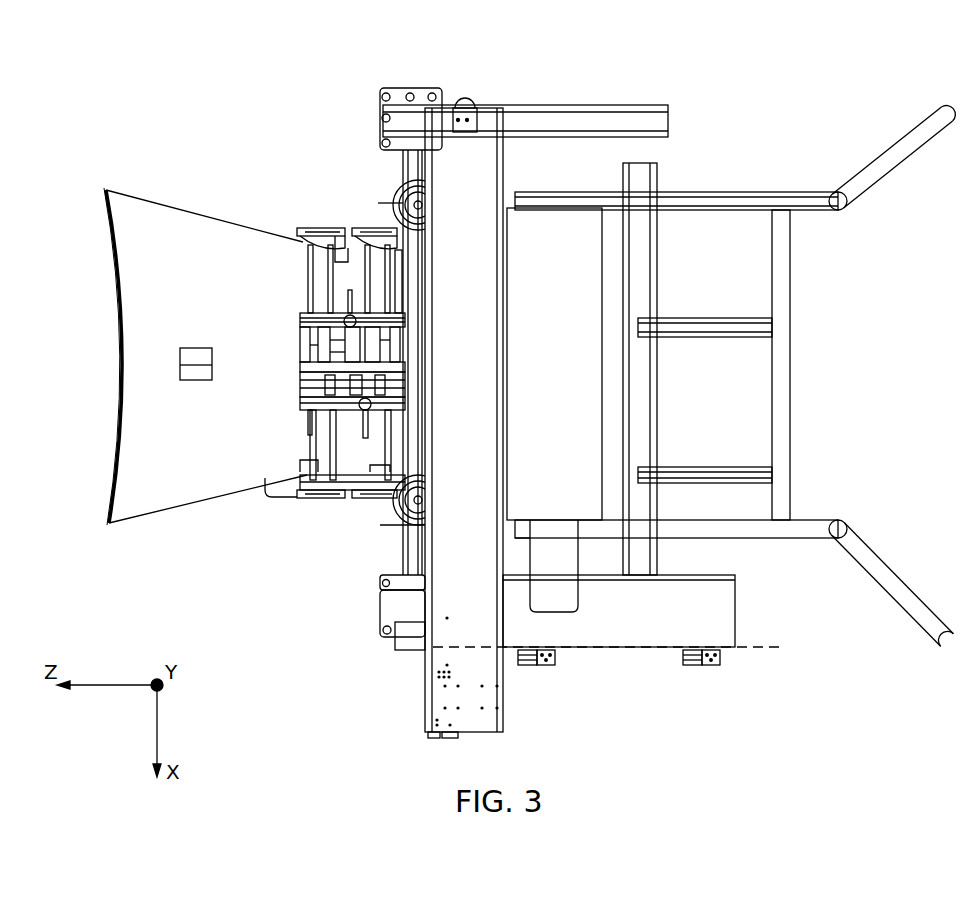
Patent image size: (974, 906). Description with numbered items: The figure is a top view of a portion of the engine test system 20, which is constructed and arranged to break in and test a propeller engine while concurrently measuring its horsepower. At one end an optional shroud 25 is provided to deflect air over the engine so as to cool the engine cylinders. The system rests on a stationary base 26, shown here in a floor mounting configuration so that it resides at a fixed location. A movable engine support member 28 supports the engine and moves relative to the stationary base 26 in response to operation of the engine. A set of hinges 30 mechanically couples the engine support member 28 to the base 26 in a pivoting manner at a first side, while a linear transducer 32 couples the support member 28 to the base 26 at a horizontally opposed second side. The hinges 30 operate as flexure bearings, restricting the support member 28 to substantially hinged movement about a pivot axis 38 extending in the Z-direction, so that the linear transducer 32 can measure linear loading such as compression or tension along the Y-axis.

The engine test system 20 is at (318, 103).
The shroud 25 is at (122, 332).
The stationary base 26 is at (387, 632).
The movable engine support member 28 is at (362, 542).
The hinges 30 is at (660, 717).
The linear transducer 32 is at (407, 163).
The pivot axis 38 is at (763, 647).